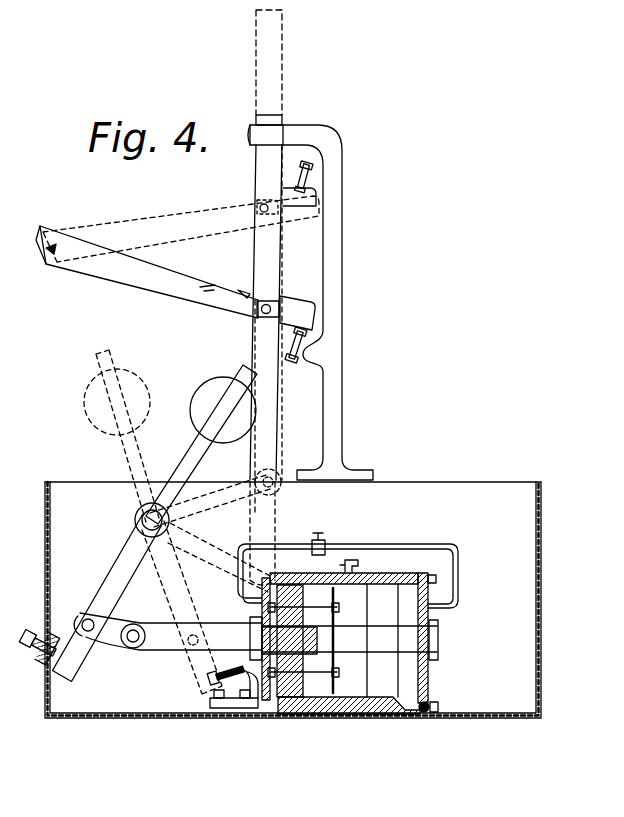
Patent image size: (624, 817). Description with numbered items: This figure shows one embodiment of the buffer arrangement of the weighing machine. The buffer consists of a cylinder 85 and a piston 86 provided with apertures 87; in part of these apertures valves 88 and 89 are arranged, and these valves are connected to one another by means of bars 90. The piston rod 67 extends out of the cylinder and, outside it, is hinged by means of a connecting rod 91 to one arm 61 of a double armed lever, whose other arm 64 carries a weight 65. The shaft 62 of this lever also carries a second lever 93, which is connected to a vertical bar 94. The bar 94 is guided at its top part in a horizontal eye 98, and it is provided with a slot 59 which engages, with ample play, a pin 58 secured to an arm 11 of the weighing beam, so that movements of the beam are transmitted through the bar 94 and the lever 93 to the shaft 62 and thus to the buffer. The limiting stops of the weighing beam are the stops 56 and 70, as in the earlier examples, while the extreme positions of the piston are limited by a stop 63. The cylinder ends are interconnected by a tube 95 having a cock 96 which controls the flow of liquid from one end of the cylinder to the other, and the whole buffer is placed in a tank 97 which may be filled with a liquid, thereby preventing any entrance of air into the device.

The arm of the weighing beam 11 is at (118, 268).
The limiting stop 56 is at (303, 335).
The pin 58 is at (250, 293).
The slot 59 is at (273, 303).
The arm of the double armed lever 61 is at (125, 565).
The shaft 62 is at (143, 510).
The stop 63 is at (48, 640).
The arm of the lever 64 is at (200, 452).
The weight 65 is at (222, 392).
The piston rod 67 is at (165, 640).
The limiting stop 70 is at (307, 193).
The cylinder 85 is at (386, 574).
The piston 86 is at (327, 655).
The apertures 87 is at (292, 686).
The valve 88 is at (273, 693).
The valve 89 is at (334, 697).
The bars 90 is at (320, 690).
The connecting rod 91 is at (110, 637).
The second lever 93 is at (208, 556).
The vertical bar 94 is at (266, 392).
The pipe 95 is at (362, 545).
The cock 96 is at (321, 540).
The tank 97 is at (541, 521).
The horizontal eye 98 is at (252, 134).